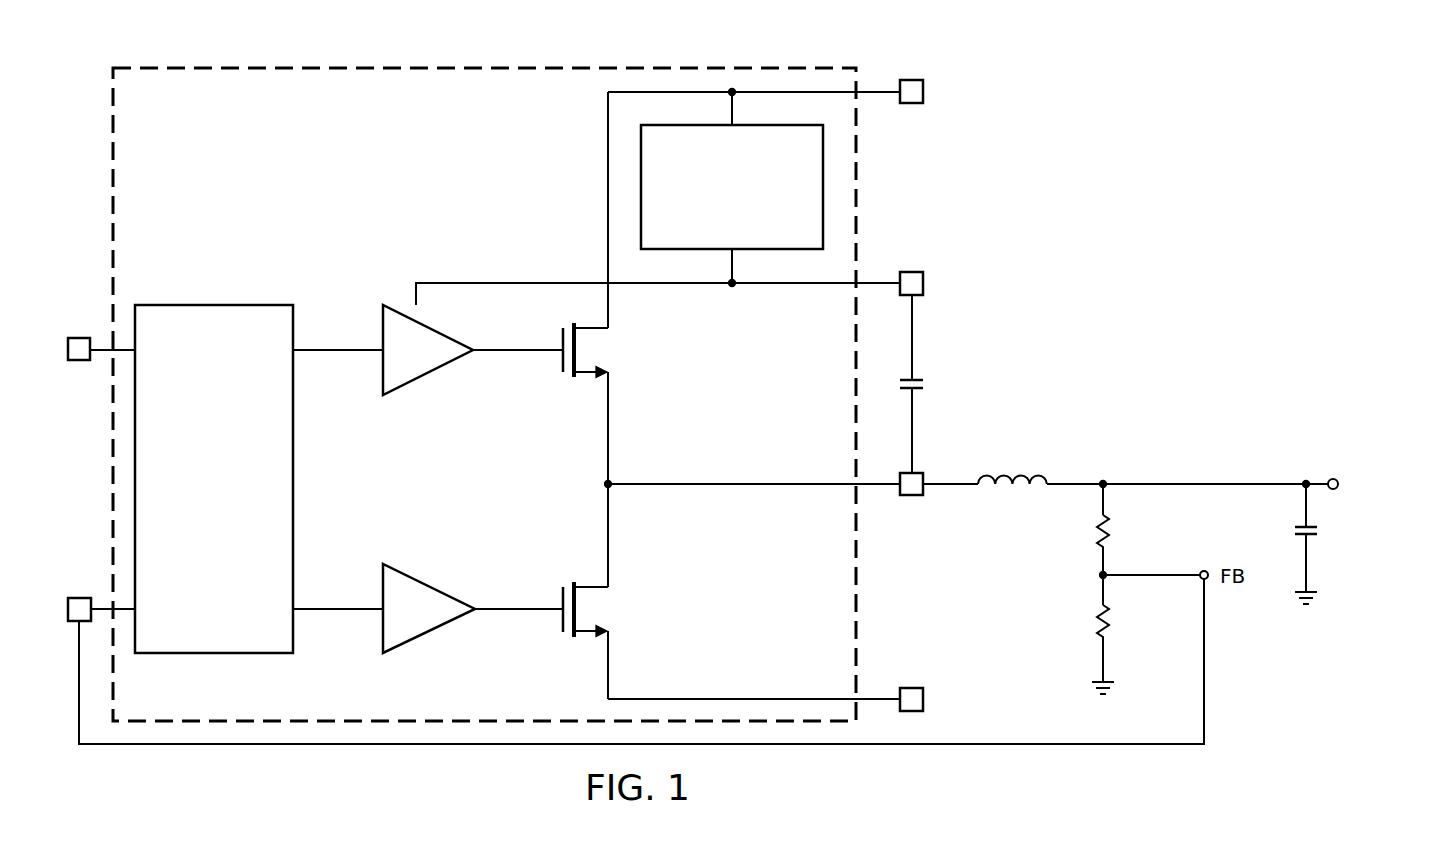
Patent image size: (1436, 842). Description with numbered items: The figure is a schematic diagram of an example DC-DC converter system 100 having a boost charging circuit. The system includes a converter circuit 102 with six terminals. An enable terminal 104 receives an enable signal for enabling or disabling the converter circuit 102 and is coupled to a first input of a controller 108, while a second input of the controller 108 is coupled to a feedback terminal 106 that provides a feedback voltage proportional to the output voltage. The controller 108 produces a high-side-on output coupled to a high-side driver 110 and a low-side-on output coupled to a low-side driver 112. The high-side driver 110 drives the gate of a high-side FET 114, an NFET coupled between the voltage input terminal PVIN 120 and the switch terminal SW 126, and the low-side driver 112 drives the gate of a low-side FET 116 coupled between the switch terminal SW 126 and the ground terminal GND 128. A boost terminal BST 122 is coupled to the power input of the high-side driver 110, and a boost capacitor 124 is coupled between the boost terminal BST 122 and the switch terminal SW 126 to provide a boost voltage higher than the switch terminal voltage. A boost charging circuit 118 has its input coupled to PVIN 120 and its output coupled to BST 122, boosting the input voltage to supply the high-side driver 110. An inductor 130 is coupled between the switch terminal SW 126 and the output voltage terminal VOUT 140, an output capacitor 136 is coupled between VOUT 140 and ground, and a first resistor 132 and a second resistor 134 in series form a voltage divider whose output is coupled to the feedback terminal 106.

The DC-DC converter system 100 is at (1180, 148).
The converter circuit 102 is at (382, 216).
The enable terminal 104 is at (80, 337).
The feedback terminal 106 is at (75, 597).
The controller 108 is at (236, 507).
The high-side driver 110 is at (430, 373).
The low-side driver 112 is at (428, 632).
The high-side FET 114 is at (560, 340).
The low-side FET 116 is at (560, 599).
The boost charging circuit 118 is at (754, 233).
The voltage input terminal PVIN 120 is at (912, 79).
The boost terminal BST 122 is at (915, 271).
The boost capacitor CB 124 is at (925, 384).
The switch terminal SW 126 is at (918, 472).
The ground terminal GND 128 is at (912, 687).
The inductor 130 is at (1038, 468).
The resistor R1 132 is at (1109, 532).
The resistor R2 134 is at (1109, 622).
The output capacitor COUT 136 is at (1318, 532).
The output voltage terminal VOUT 140 is at (1336, 478).